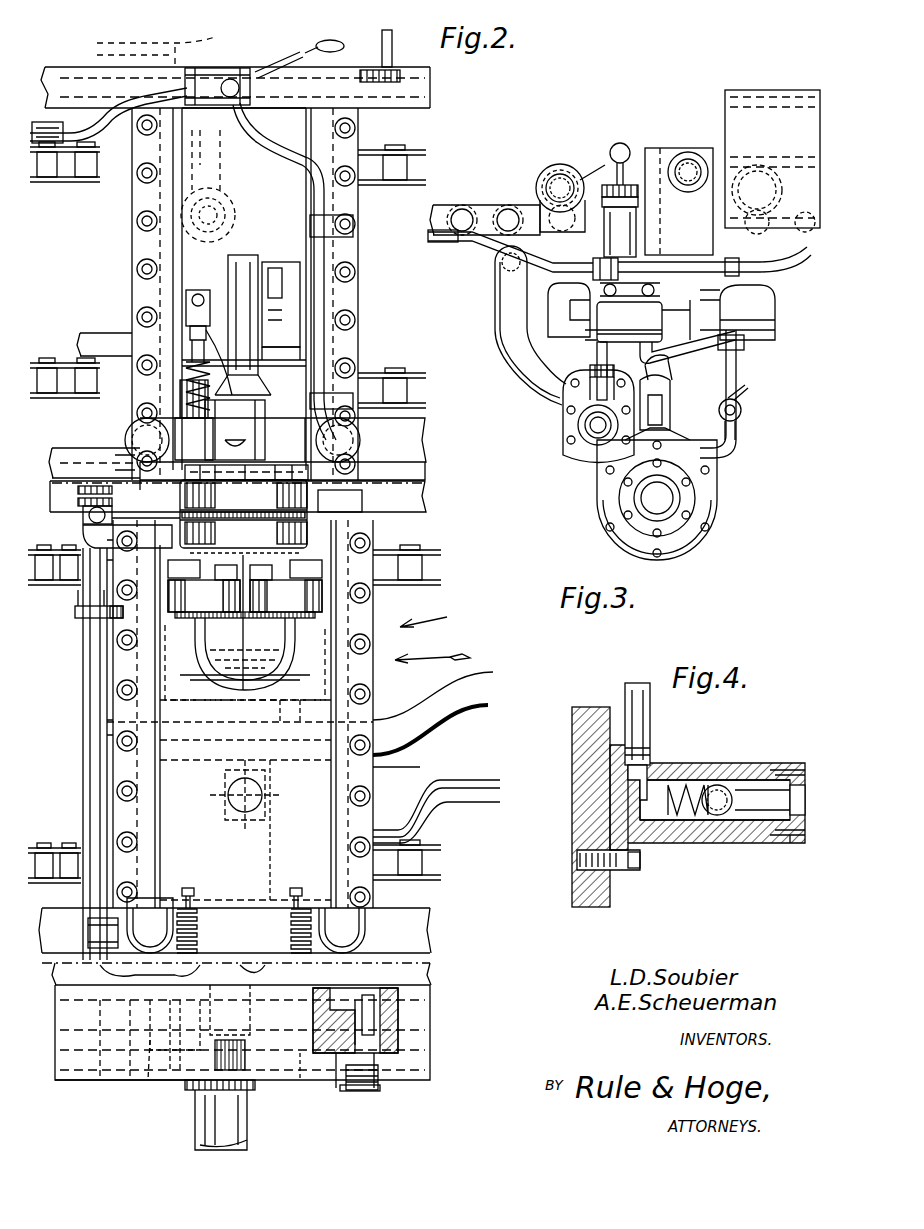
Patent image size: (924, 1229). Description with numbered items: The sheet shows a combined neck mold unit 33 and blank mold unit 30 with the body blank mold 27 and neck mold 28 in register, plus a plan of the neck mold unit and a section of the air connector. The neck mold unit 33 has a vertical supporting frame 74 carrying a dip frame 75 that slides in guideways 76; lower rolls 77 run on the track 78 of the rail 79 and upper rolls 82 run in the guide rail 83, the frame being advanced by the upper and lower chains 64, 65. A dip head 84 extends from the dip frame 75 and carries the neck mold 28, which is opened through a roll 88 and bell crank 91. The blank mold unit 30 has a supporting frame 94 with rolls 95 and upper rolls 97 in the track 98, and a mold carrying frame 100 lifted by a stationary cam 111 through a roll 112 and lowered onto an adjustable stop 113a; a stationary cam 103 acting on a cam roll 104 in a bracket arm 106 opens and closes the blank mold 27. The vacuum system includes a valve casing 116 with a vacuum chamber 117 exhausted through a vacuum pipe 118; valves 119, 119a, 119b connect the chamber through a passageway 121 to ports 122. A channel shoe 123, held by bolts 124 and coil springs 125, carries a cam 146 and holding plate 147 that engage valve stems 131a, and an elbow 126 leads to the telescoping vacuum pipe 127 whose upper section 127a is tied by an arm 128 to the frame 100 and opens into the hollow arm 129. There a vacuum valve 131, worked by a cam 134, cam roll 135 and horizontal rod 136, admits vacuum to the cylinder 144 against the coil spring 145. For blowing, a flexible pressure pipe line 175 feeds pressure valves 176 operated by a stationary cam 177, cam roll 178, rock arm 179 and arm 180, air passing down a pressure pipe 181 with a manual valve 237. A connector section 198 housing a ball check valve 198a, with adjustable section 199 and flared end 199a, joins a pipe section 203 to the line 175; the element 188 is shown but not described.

In FIG. 2, the body blank mold 27 is at (215, 700).
In FIG. 2, the neck mold 28 is at (340, 499).
In FIG. 2, the blank mold unit 30 is at (432, 632).
In FIG. 2, the neck mold unit 33 is at (121, 262).
In FIG. 3, the neck mold unit 33 is at (533, 394).
In FIG. 2, the upper chain 64 is at (413, 152).
In FIG. 3, the upper chain 64 is at (432, 200).
In FIG. 2, the lower chain 65 is at (408, 373).
In FIG. 2, the supporting frame 74 is at (244, 121).
In FIG. 3, the supporting frame 74 is at (752, 300).
In FIG. 4, the supporting frame 74 is at (600, 896).
In FIG. 2, the dip frame 75 is at (244, 295).
In FIG. 3, the dip frame 75 is at (569, 310).
In FIG. 2, the guideways 76 is at (352, 262).
In FIG. 3, the guideways 76 is at (755, 322).
In FIG. 2, the rolls 77 is at (132, 436).
In FIG. 2, the track 78 is at (420, 472).
In FIG. 2, the rail 79 is at (420, 440).
In FIG. 2, the rolls 82 is at (376, 102).
In FIG. 3, the rolls 82 is at (540, 183).
In FIG. 2, the guide rail 83 is at (430, 98).
In FIG. 3, the guide rail 83 is at (725, 105).
In FIG. 2, the dip head 84 is at (245, 541).
In FIG. 3, the dip head 84 is at (602, 496).
In FIG. 3, the roll 88 is at (705, 137).
In FIG. 2, the bell crank 91 is at (278, 300).
In FIG. 3, the bell crank 91 is at (660, 412).
In FIG. 2, the supporting frame 94 is at (433, 727).
In FIG. 2, the rolls 95 is at (176, 905).
In FIG. 2, the upper rolls 97 is at (370, 496).
In FIG. 2, the track 98 is at (425, 508).
In FIG. 2, the mold carrying frame 100 is at (240, 800).
In FIG. 2, the stationary cam 103 is at (82, 752).
In FIG. 2, the cam roll 104 is at (293, 829).
In FIG. 2, the bracket arm 106 is at (298, 720).
In FIG. 2, the stationary cam 111 is at (430, 808).
In FIG. 2, the roll 112 is at (267, 795).
In FIG. 2, the adjustable stop 113a is at (295, 890).
In FIG. 2, the valve casing 116 is at (105, 1082).
In FIG. 2, the vacuum chamber 117 is at (350, 1090).
In FIG. 2, the vacuum pipe 118 is at (212, 1124).
In FIG. 2, the valve 119 is at (385, 1062).
In FIG. 2, the valve 119a is at (295, 1085).
In FIG. 2, the valve 119b is at (165, 1062).
In FIG. 2, the passageway 121 is at (385, 1030).
In FIG. 2, the port 122 is at (335, 985).
In FIG. 2, the channel-shaped bar or shoe 123 is at (300, 925).
In FIG. 2, the bolts 124 is at (192, 890).
In FIG. 2, the coil springs 125 is at (174, 925).
In FIG. 2, the elbow 126 is at (88, 948).
In FIG. 2, the vacuum pipe 127 is at (85, 700).
In FIG. 2, the upper pipe section 127a is at (100, 600).
In FIG. 2, the arm 128 is at (115, 524).
In FIG. 2, the hollow arm 129 is at (90, 478).
In FIG. 3, the hollow arm 129 is at (505, 305).
In FIG. 2, the vacuum valve 131 is at (182, 447).
In FIG. 3, the vacuum valve 131 is at (580, 430).
In FIG. 2, the valve stems 131a is at (85, 975).
In FIG. 2, the cam 134 is at (92, 340).
In FIG. 3, the cam roll 135 is at (630, 137).
In FIG. 2, the horizontal rod 136 is at (200, 290).
In FIG. 3, the horizontal rod 136 is at (585, 372).
In FIG. 2, the cylinder 144 is at (235, 430).
In FIG. 3, the cylinder 144 is at (690, 510).
In FIG. 2, the coil spring 145 is at (240, 272).
In FIG. 3, the coil spring 145 is at (670, 496).
In FIG. 2, the cam 146 is at (232, 1000).
In FIG. 2, the holding plate 147 is at (226, 1027).
In FIG. 2, the pressure pipe line 175 is at (95, 125).
In FIG. 3, the pressure pipe line 175 is at (445, 248).
In FIG. 2, the pressure valve 176 is at (215, 70).
In FIG. 3, the pressure valve 176 is at (660, 323).
In FIG. 2, the stationary cam 177 is at (183, 44).
In FIG. 2, the cam roll 178 is at (342, 38).
In FIG. 3, the cam roll 178 is at (705, 258).
In FIG. 2, the rock arm 179 is at (282, 58).
In FIG. 2, the arm 180 is at (336, 55).
In FIG. 2, the pressure pipe 181 is at (293, 163).
In FIG. 3, the pressure pipe 181 is at (750, 348).
In FIG. 3, the fitting 188 is at (576, 165).
In FIG. 2, the connector section 198 is at (218, 195).
In FIG. 4, the connector section 198 is at (680, 840).
In FIG. 4, the ball check valve 198a is at (705, 782).
In FIG. 4, the adjustable section 199 is at (795, 765).
In FIG. 4, the flared open end 199a is at (805, 845).
In FIG. 4, the pipe section 203 is at (636, 691).
In FIG. 2, the valve 237 is at (356, 440).
In FIG. 3, the valve 237 is at (742, 408).